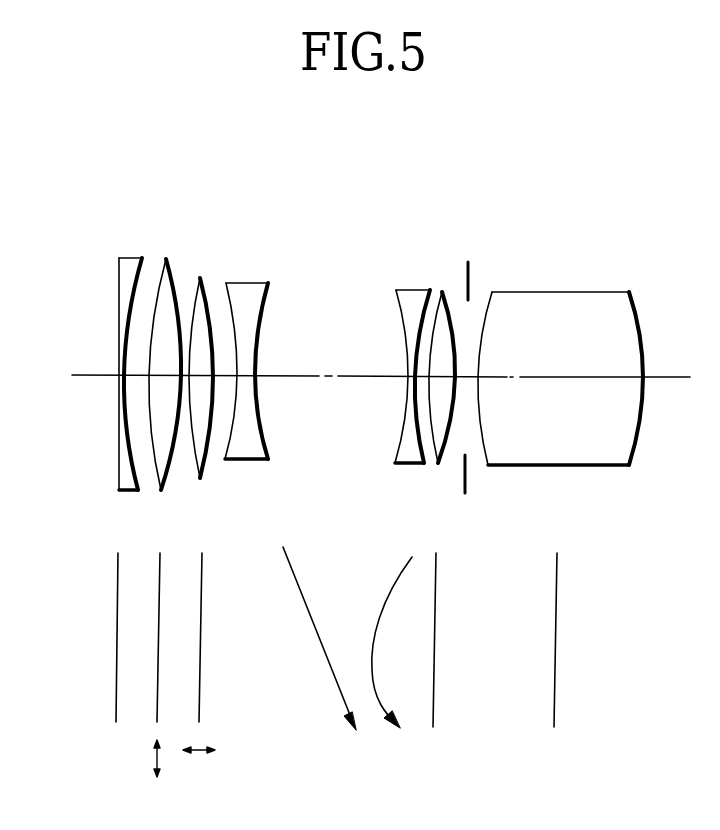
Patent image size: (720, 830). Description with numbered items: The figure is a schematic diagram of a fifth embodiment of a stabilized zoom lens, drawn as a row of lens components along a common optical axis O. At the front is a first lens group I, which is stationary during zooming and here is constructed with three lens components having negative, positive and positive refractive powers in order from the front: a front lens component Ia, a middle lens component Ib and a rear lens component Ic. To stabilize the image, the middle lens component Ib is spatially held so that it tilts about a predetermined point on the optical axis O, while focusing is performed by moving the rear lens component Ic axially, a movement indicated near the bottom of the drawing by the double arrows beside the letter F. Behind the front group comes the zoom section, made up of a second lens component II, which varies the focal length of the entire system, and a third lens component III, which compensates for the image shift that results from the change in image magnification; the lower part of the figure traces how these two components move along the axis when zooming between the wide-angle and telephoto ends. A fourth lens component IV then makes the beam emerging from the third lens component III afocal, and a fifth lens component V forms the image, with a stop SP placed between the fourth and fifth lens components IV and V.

The first lens group I is at (103, 175).
The front lens component Ia is at (132, 263).
The middle lens component Ib is at (166, 262).
The rear lens component Ic is at (200, 277).
The second lens component II is at (245, 283).
The third lens component III is at (410, 294).
The fourth lens component IV is at (440, 294).
The fifth lens component V is at (558, 293).
The stop SP is at (470, 270).
The optical axis O is at (80, 377).
The focusing movement F is at (184, 761).